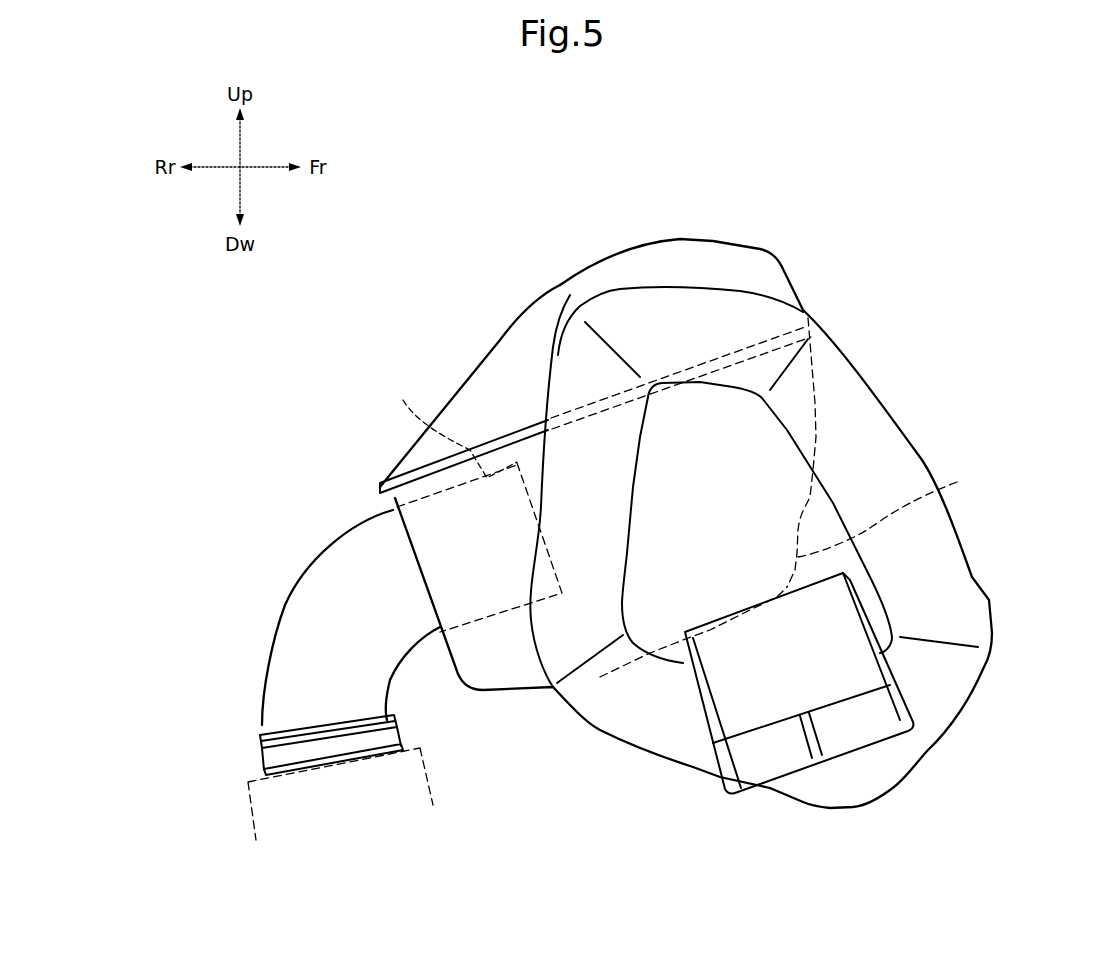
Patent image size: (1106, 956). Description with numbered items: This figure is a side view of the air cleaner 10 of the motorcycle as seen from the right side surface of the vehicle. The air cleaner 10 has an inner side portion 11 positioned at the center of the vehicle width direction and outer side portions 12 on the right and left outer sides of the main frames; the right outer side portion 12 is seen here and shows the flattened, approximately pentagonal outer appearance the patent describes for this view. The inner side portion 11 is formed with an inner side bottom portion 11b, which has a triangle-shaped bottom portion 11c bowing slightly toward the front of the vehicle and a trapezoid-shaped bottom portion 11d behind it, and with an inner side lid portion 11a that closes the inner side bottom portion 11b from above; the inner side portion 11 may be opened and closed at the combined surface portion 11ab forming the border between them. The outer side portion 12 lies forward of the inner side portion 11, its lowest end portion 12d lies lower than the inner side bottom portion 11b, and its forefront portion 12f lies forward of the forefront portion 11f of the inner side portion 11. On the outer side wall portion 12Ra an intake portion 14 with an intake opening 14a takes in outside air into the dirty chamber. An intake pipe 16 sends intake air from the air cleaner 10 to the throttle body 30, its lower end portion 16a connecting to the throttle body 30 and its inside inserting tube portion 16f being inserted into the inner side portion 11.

The air cleaner 10 is at (903, 325).
The inner side portion 11 is at (575, 282).
The inner side lid portion 11a is at (480, 397).
The combined surface portion 11ab is at (441, 484).
The inner side bottom portion 11b is at (504, 638).
The triangle-shaped bottom portion 11c is at (898, 513).
The trapezoid-shaped bottom portion 11d is at (528, 690).
The forefront portion of the inner side portion 11f is at (805, 312).
The outer side portion 12 is at (918, 455).
The outer side wall portion 12Ra is at (900, 537).
The lowest end portion 12d is at (843, 808).
The forefront portion 12f is at (990, 630).
The intake portion 14 is at (850, 668).
The intake opening 14a is at (800, 773).
The intake pipe 16 is at (300, 580).
The lower end portion 16a is at (320, 750).
The inside inserting tube portion 16f is at (451, 425).
The throttle body 30 is at (250, 810).